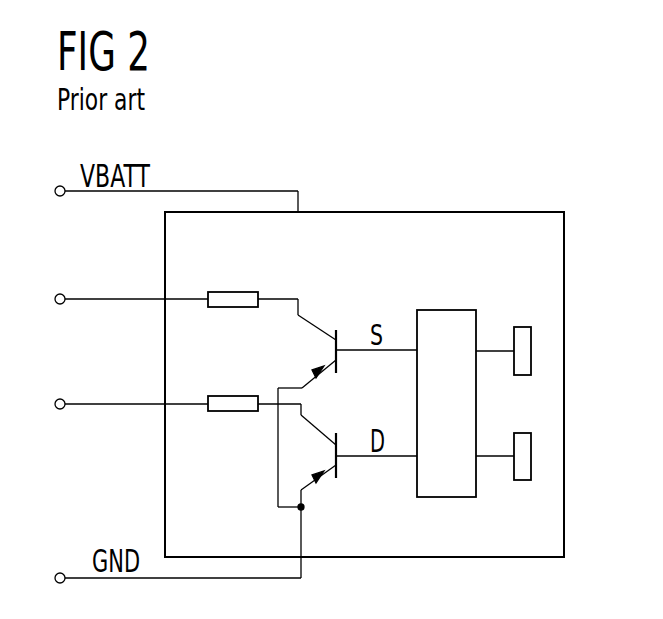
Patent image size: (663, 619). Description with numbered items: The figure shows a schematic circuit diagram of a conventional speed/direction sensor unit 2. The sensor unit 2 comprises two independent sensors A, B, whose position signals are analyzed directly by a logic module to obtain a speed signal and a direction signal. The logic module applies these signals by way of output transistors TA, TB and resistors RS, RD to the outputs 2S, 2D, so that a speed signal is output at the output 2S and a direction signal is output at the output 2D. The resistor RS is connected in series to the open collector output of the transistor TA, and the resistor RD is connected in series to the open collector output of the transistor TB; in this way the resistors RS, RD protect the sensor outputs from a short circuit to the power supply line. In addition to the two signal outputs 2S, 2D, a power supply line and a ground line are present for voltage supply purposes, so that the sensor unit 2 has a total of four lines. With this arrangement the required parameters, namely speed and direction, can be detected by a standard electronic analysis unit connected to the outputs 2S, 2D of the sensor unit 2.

The speed/direction sensor unit 2 is at (435, 212).
The output 2S is at (131, 284).
The output 2D is at (131, 389).
The resistor RS is at (238, 292).
The resistor RD is at (237, 396).
The transistor TA is at (338, 366).
The transistor TB is at (338, 471).
The sensor A is at (523, 327).
The sensor B is at (522, 480).